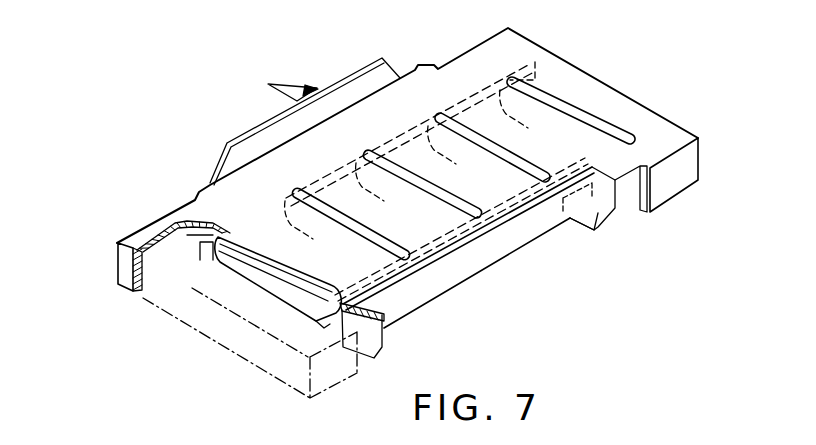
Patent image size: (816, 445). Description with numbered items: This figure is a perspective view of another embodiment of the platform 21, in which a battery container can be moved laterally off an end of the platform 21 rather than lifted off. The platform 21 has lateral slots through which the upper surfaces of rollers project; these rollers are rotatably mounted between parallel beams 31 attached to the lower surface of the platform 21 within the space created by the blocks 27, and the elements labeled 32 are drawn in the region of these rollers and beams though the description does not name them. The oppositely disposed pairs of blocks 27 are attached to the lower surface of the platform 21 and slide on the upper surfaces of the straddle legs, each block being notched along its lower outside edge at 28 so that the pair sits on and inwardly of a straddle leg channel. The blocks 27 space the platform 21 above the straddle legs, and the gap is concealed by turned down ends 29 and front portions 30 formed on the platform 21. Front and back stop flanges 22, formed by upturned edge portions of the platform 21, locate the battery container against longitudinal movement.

The platform 21 is at (455, 54).
The stop flanges 22 is at (254, 130).
The blocks 27 is at (374, 327).
The notch 28 is at (594, 211).
The turned down ends 29 is at (109, 262).
The front portions 30 is at (665, 174).
The parallel beams 31 is at (192, 212).
The bar 32 is at (262, 277).